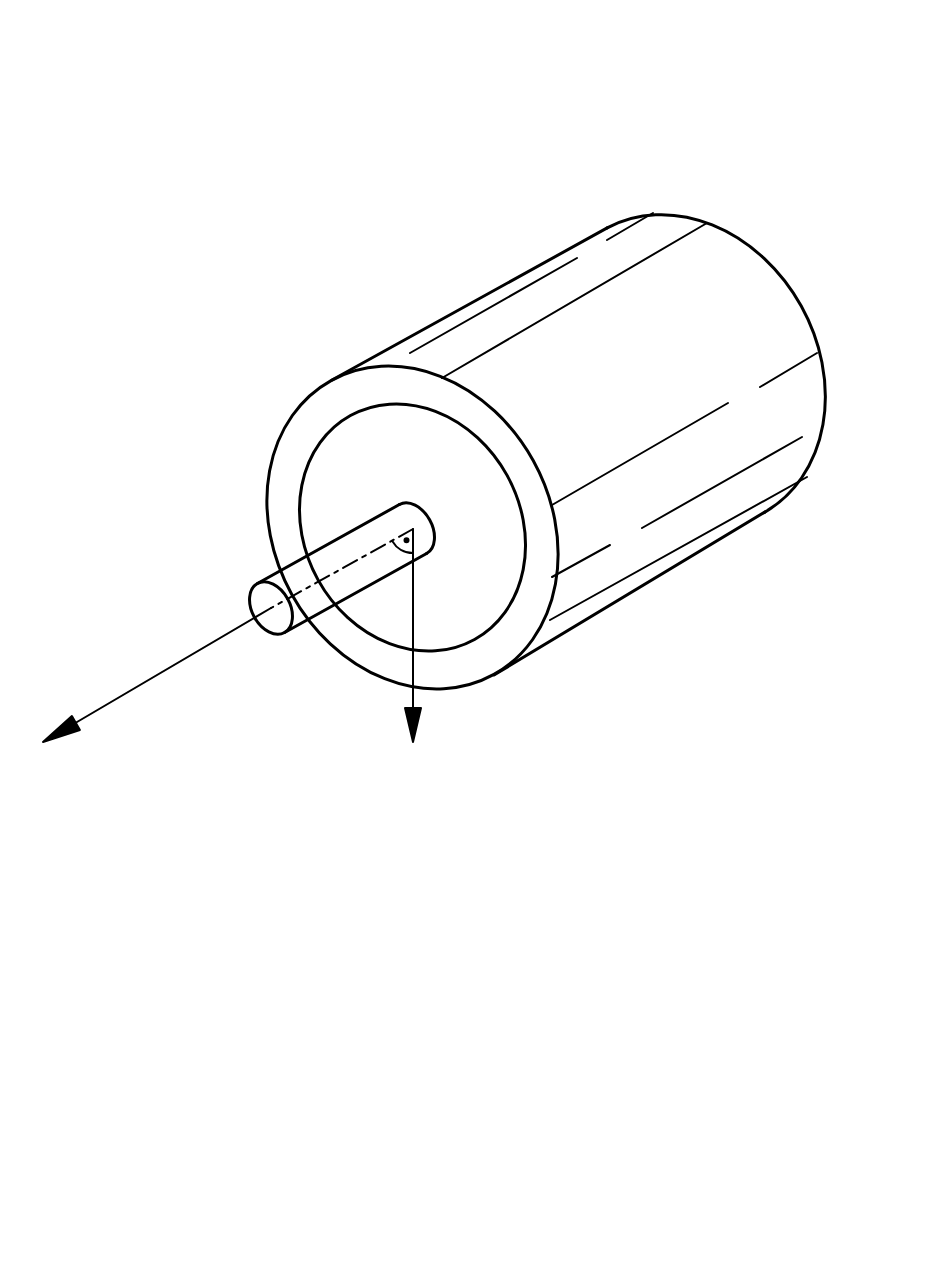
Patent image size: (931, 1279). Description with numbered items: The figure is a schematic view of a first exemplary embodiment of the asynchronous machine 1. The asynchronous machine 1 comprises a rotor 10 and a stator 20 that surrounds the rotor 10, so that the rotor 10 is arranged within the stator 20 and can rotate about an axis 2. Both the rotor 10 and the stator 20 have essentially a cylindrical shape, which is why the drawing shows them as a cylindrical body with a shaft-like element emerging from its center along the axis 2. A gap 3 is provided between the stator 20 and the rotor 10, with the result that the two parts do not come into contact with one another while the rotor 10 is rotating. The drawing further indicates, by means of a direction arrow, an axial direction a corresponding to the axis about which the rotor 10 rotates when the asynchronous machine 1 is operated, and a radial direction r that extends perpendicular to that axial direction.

The asynchronous machine 1 is at (429, 185).
The axis 2 is at (363, 548).
The gap 3 is at (490, 637).
The rotor 10 is at (360, 450).
The stator 20 is at (377, 383).